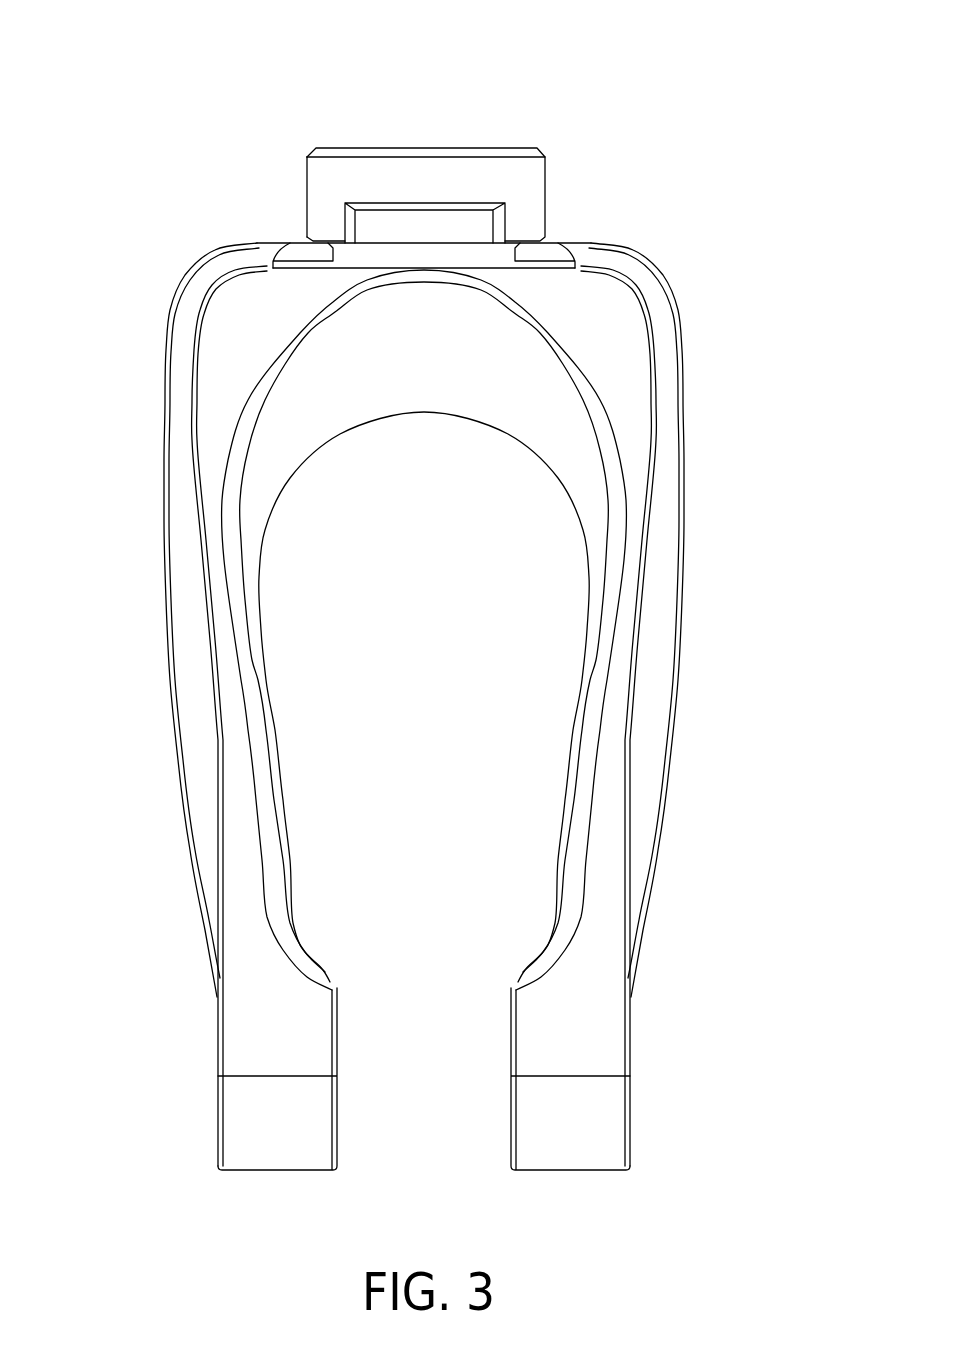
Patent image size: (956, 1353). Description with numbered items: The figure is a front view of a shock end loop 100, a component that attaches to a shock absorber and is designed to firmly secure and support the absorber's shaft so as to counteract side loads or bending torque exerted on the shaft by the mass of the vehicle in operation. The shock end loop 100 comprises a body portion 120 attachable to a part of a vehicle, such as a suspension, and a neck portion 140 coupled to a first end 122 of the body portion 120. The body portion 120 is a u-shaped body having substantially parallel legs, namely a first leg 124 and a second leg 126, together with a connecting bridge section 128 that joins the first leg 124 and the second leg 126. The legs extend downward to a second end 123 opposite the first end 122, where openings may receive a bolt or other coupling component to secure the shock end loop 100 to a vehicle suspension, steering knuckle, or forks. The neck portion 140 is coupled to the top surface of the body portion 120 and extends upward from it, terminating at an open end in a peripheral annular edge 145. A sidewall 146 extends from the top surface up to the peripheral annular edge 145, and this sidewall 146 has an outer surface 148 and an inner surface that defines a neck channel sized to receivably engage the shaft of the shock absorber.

The shock end loop 100 is at (293, 93).
The body portion 120 is at (702, 362).
The first end 122 is at (238, 240).
The second end 123 is at (303, 1187).
The first leg 124 is at (197, 645).
The second leg 126 is at (665, 647).
The connecting bridge section 128 is at (550, 257).
The neck portion 140 is at (562, 170).
The peripheral annular edge 145 is at (482, 152).
The sidewall 146 is at (322, 175).
The outer surface 148 is at (397, 175).